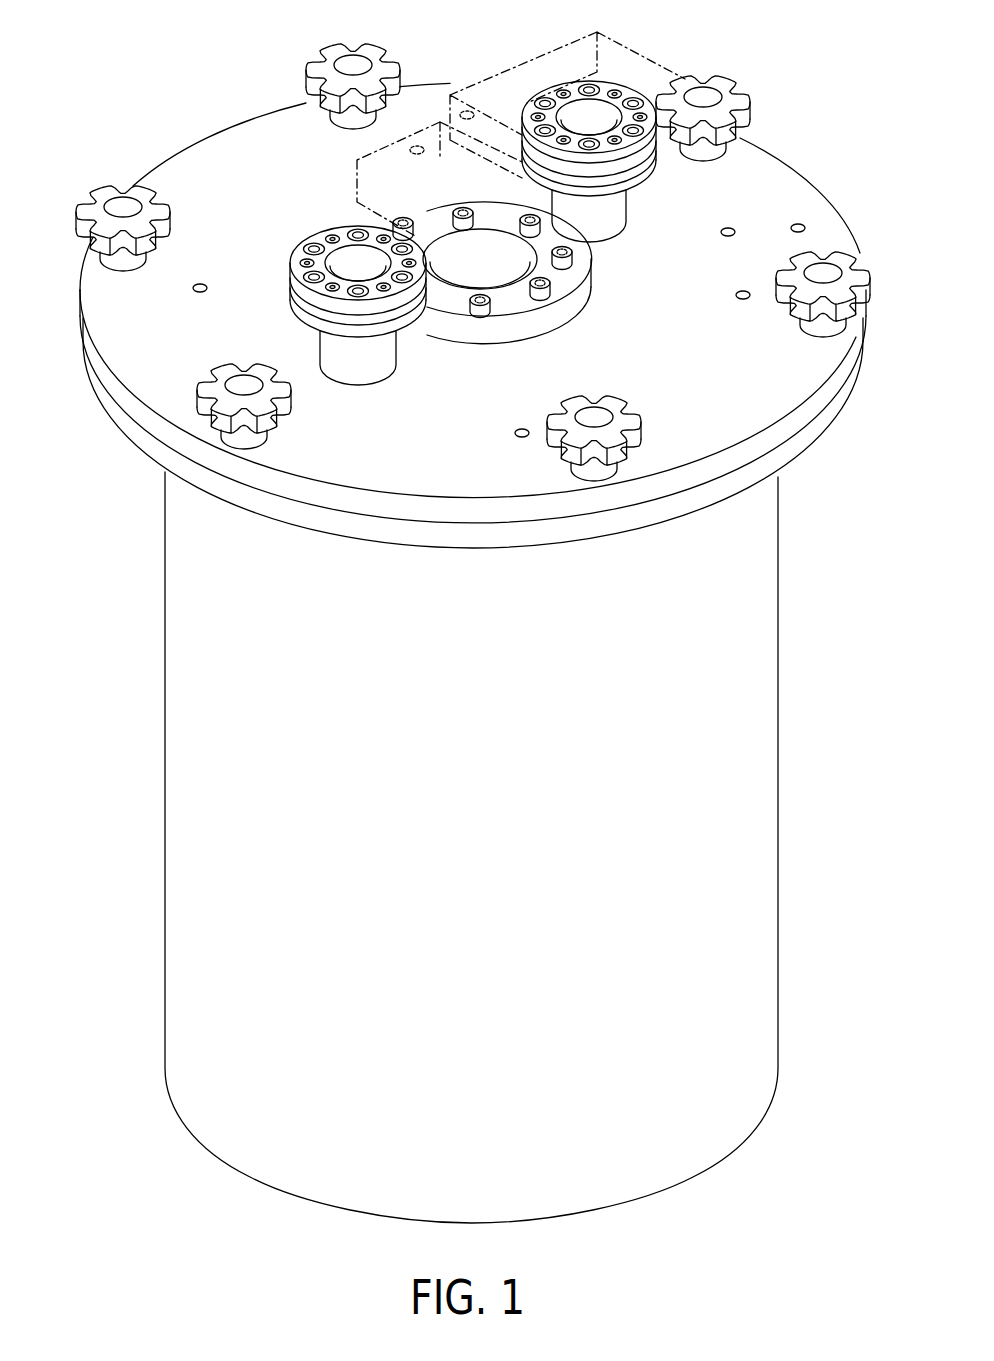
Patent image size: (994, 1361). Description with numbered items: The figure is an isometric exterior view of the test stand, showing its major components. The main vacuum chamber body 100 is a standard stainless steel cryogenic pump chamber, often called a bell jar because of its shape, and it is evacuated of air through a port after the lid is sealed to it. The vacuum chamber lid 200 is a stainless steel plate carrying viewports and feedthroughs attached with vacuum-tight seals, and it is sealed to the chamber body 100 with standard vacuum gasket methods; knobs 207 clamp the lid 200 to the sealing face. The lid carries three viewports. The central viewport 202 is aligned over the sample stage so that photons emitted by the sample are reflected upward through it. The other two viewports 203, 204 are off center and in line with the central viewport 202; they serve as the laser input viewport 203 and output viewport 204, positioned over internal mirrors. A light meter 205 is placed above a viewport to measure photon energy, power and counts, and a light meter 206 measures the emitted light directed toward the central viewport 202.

The vacuum chamber body 100 is at (185, 678).
The vacuum chamber lid 200 is at (97, 333).
The central viewport 202 is at (560, 283).
The input viewport 203 is at (297, 253).
The output viewport 204 is at (548, 102).
The light meter 205 is at (575, 220).
The light meter 206 is at (630, 48).
The knobs 207 is at (317, 67).